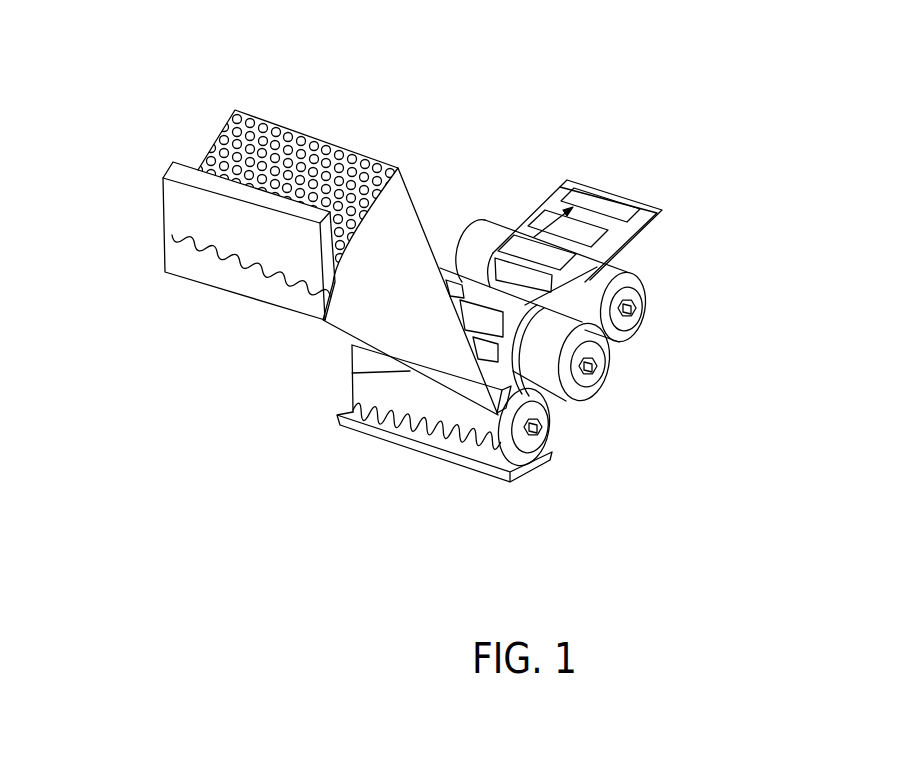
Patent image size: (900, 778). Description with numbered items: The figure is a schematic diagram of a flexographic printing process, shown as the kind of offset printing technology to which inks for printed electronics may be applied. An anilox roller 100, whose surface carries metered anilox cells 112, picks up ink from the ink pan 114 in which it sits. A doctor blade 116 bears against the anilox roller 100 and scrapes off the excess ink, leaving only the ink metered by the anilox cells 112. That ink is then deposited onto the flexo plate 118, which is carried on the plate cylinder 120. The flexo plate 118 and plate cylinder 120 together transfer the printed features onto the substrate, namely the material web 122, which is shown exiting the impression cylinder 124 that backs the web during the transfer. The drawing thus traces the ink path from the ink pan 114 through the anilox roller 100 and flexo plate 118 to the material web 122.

The anilox roller 100 is at (352, 388).
The metered anilox cells 112 is at (267, 118).
The ink pan 114 is at (503, 478).
The doctor blade 116 is at (208, 218).
The flexo plate 118 is at (607, 353).
The plate cylinder 120 is at (561, 401).
The material web 122 is at (641, 244).
The impression cylinder 124 is at (498, 225).